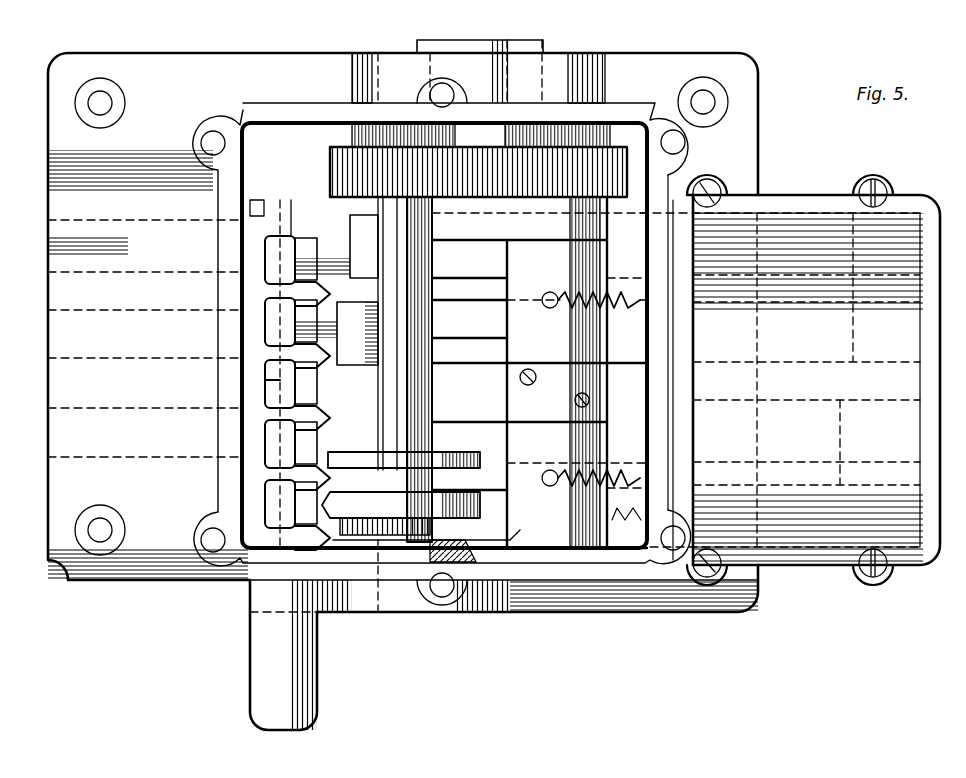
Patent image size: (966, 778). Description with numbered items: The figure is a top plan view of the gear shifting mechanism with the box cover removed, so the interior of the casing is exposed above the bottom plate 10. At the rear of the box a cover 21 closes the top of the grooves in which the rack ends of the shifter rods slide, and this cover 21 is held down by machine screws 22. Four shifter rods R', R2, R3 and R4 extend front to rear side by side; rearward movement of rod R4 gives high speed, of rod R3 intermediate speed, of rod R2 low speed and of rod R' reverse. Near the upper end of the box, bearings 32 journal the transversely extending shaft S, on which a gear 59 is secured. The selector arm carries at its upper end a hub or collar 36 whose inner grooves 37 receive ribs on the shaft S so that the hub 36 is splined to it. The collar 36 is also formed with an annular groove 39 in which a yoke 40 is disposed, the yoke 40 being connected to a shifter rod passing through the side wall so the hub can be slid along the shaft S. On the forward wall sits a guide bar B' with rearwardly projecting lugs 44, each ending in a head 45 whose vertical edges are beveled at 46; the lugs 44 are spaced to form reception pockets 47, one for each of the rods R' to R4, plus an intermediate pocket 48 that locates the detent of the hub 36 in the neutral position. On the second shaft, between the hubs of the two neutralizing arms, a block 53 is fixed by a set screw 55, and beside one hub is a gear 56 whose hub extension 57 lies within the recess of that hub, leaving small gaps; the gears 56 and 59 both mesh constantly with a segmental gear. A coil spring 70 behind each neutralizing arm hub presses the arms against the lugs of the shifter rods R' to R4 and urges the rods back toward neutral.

The bottom plate 10 is at (755, 165).
The cover 21 is at (910, 226).
The machine screws 22 is at (720, 578).
The bearings 32 is at (363, 62).
The hub or collar 36 is at (466, 522).
The grooves 37 is at (400, 388).
The annular groove 39 is at (402, 458).
The yoke 40 is at (470, 490).
The lugs 44 is at (291, 210).
The head 45 is at (332, 216).
The beveled edges 46 is at (333, 300).
The reception pockets or recesses 47 is at (266, 250).
The intermediate recess or pocket 48 is at (278, 383).
The block 53 is at (587, 400).
The set screw 55 is at (537, 377).
The gear 56 is at (602, 160).
The hub extension 57 is at (592, 222).
The gear 59 is at (437, 162).
The coil spring 70 is at (615, 305).
The guide bar B' is at (442, 334).
The shaft S is at (433, 236).
The shifter rod R' is at (539, 505).
The shifter rod R2 is at (519, 402).
The shifter rod R3 is at (490, 326).
The shifter rod R4 is at (500, 262).